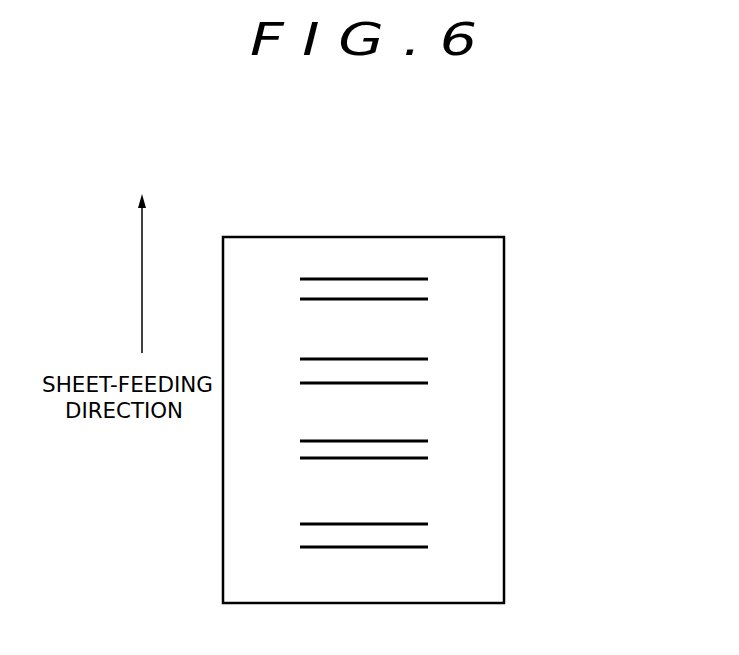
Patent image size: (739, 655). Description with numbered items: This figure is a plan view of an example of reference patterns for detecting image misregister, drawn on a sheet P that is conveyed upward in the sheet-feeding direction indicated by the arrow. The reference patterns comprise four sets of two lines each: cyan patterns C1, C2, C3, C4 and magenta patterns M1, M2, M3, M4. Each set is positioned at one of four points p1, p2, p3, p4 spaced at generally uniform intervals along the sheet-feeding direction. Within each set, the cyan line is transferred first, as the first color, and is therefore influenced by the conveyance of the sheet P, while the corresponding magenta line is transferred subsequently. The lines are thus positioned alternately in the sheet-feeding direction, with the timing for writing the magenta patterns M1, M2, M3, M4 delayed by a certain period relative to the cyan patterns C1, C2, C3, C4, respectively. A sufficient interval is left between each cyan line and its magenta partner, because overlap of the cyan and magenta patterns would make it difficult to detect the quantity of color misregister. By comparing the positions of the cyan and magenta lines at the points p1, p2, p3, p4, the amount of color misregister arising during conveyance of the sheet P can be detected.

The sheet P is at (410, 237).
The cyan pattern C1 is at (380, 279).
The cyan pattern C2 is at (372, 359).
The cyan pattern C3 is at (372, 441).
The cyan pattern C4 is at (375, 524).
The magenta pattern M1 is at (332, 299).
The magenta pattern M2 is at (320, 383).
The magenta pattern M3 is at (315, 458).
The magenta pattern M4 is at (310, 547).
The point p1 is at (531, 289).
The point p2 is at (531, 373).
The point p3 is at (531, 454).
The point p4 is at (528, 534).